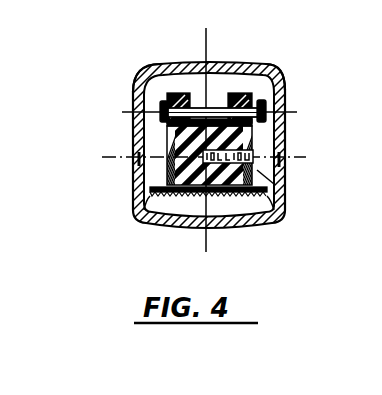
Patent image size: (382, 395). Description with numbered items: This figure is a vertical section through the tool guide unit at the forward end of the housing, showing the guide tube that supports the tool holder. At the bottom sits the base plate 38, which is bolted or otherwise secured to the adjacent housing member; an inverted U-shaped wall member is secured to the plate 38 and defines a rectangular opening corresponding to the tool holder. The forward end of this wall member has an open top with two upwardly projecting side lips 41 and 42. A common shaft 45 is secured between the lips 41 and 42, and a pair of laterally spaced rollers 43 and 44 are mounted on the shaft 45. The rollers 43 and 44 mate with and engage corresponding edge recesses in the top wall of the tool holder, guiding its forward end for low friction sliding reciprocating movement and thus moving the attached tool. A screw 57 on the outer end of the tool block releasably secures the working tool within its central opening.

The base plate 38 is at (137, 217).
The side lip 41 is at (157, 70).
The side lip 42 is at (280, 77).
The roller 43 is at (182, 93).
The roller 44 is at (232, 93).
The common shaft 45 is at (140, 100).
The screw 57 is at (284, 184).